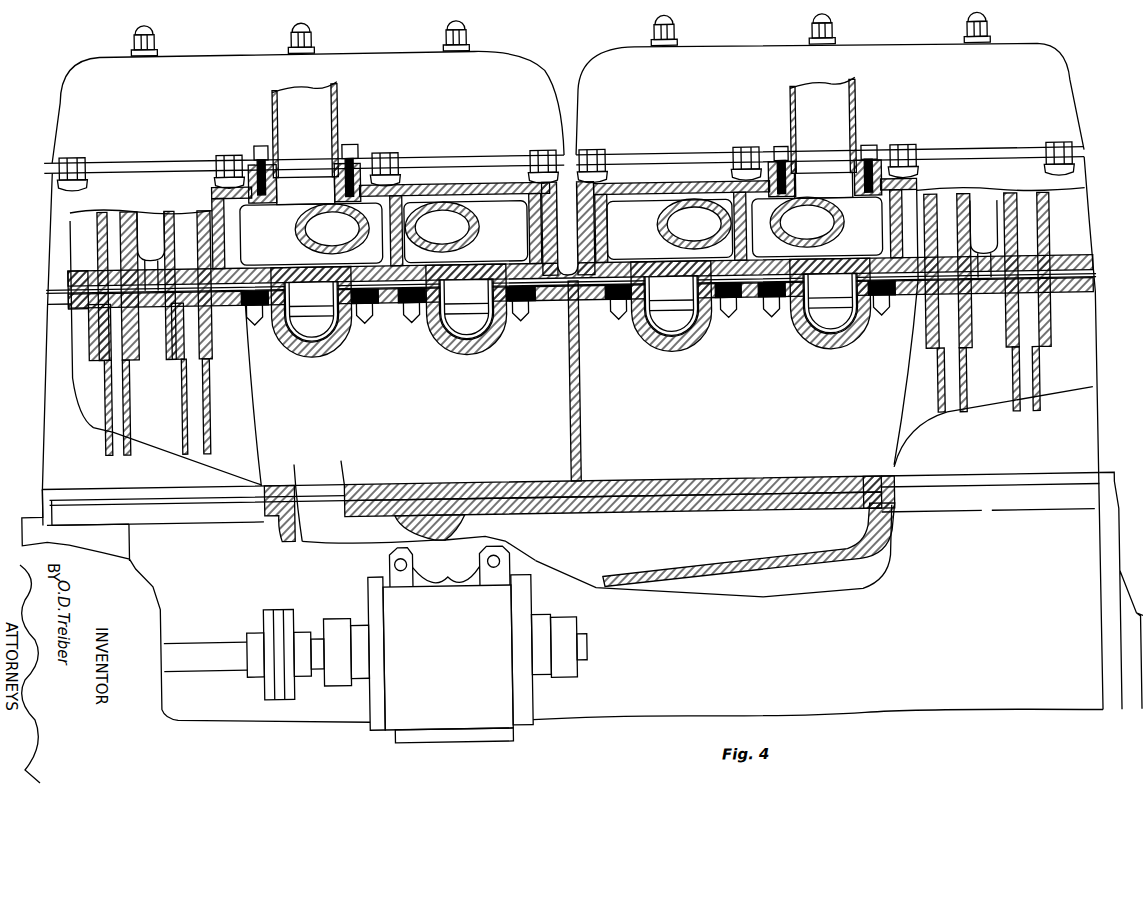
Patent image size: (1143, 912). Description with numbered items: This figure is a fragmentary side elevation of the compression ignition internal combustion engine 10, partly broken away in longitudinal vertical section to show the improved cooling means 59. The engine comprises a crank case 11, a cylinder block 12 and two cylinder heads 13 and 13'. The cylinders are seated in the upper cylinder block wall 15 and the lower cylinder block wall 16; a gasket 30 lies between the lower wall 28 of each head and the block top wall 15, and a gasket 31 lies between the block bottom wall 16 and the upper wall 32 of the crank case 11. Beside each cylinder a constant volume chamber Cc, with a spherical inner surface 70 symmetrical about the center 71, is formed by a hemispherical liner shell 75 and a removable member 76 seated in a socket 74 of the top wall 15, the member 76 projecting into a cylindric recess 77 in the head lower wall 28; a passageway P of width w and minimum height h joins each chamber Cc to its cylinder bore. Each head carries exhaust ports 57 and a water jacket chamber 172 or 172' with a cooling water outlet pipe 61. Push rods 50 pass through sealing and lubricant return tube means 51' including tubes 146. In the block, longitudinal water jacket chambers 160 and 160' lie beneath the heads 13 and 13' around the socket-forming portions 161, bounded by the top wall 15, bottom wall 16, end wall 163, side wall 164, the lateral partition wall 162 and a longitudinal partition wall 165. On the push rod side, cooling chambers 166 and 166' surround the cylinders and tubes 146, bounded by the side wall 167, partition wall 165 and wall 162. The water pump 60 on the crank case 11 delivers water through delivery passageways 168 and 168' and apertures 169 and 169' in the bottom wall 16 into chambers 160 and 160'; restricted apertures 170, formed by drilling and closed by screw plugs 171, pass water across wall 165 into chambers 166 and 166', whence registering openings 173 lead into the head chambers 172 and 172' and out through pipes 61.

The compression ignition internal combustion engine 10 is at (914, 722).
The crank case 11 is at (817, 662).
The cylinder block 12 is at (1098, 432).
The cylinder head 13 is at (284, 270).
The cylinder head 13' is at (856, 378).
The upper cylinder block wall 15 is at (566, 330).
The lower cylinder block wall 16 is at (730, 480).
The lower wall of cylinder head 28 is at (482, 270).
The gasket 30 is at (48, 285).
The gasket 31 is at (42, 492).
The upper wall of crank case 32 is at (626, 514).
The push rod 50 is at (182, 398).
The sealing and lubricant return tube means 51' is at (581, 400).
The exhaust port 57 is at (570, 226).
The cooling means 59 is at (363, 596).
The water pump 60 is at (450, 645).
The cooling water outlet pipe 61 is at (343, 102).
The curved inner surface 70 is at (574, 322).
The center of constant volume chamber 71 is at (571, 307).
The socket 74 is at (568, 333).
The liner shell 75 is at (591, 364).
The removable member 76 is at (580, 230).
The cylindric recess 77 is at (568, 255).
The sealing and lubricant return tube 146 is at (128, 430).
The water jacket cooling chamber 160 is at (410, 439).
The water jacket cooling chamber 160' is at (655, 434).
The socket-forming portions of top wall 161 is at (514, 364).
The lateral partition wall 162 is at (581, 408).
The cylinder block end wall 163 is at (45, 388).
The cylinder block side wall 164 is at (993, 427).
The longitudinal partition wall 165 is at (510, 500).
The cooling chamber 166 is at (230, 396).
The cooling chamber 166' is at (903, 326).
The cylinder block side wall 167 is at (90, 405).
The water delivery passageway 168 is at (399, 526).
The water delivery passageway 168' is at (715, 552).
The aperture 169 is at (320, 491).
The aperture 169' is at (849, 469).
The restricted aperture 170 is at (570, 325).
The screw plug 171 is at (494, 333).
The water jacket chamber 172 is at (383, 201).
The water jacket chamber 172' is at (744, 195).
The registering opening 173 is at (559, 277).
The passageway P is at (571, 253).
The constant volume chamber Cc is at (600, 373).
The minimum height of passageway h is at (311, 295).
The width of passageway w is at (450, 293).